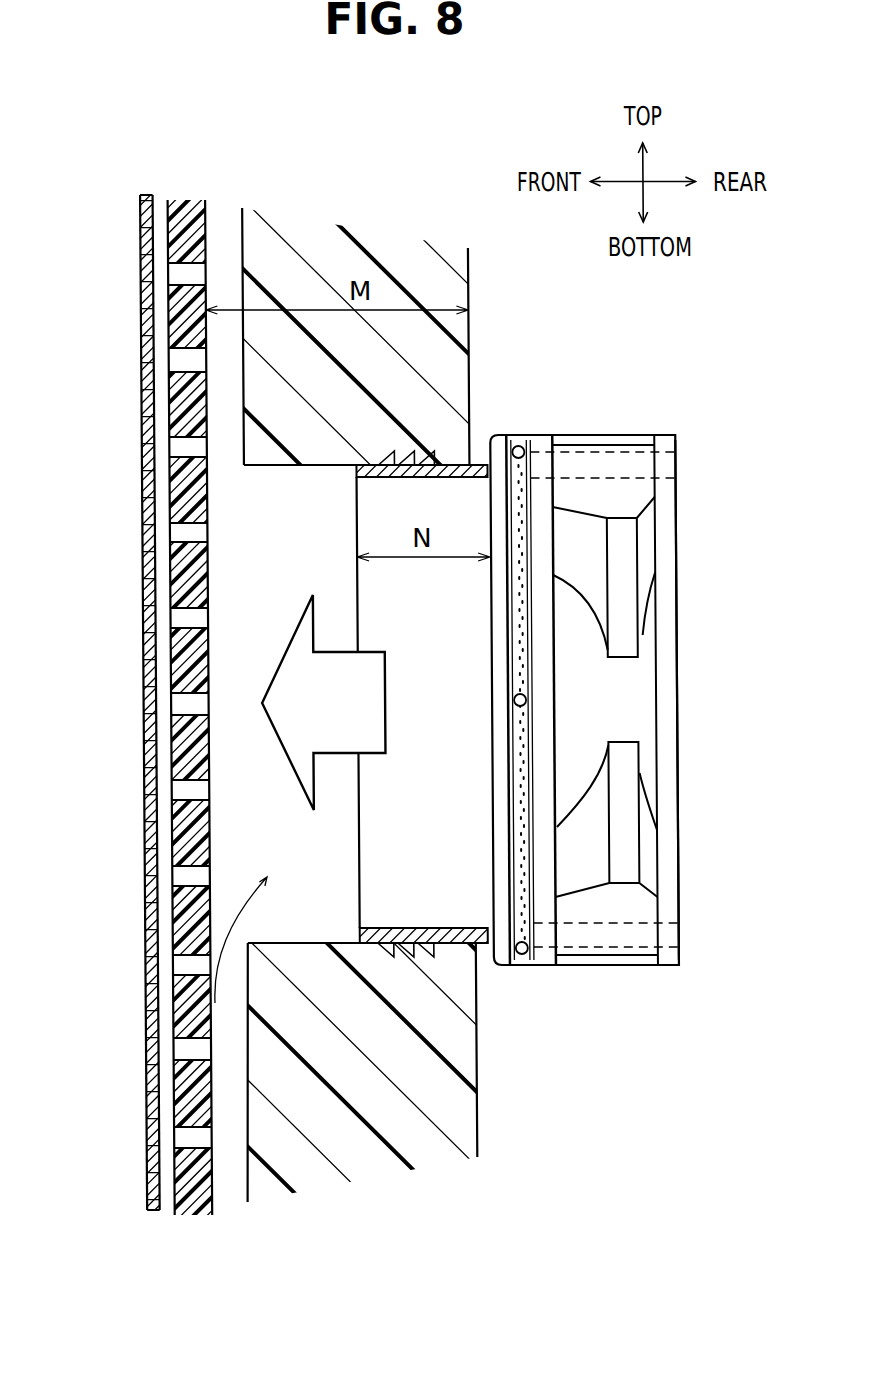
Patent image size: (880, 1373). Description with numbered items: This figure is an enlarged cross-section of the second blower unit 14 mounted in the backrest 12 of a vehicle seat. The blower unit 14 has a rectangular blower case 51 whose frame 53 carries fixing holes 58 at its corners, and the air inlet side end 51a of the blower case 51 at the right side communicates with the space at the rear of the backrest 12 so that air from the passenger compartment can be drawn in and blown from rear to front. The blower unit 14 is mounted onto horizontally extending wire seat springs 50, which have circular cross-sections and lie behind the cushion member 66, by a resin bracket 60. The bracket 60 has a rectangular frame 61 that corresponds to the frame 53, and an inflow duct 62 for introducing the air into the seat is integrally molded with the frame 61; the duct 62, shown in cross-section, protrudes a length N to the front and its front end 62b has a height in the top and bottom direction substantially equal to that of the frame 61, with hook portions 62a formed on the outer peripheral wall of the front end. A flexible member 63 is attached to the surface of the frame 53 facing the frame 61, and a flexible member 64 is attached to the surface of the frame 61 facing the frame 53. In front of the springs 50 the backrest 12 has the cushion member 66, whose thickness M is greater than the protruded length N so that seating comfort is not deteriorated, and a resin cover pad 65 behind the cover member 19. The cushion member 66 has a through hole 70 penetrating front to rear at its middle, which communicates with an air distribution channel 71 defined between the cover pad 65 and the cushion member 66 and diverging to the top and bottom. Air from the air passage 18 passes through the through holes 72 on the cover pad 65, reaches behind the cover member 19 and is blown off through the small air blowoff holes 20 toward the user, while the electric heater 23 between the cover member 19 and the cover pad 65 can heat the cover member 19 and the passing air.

The backrest 12 is at (126, 945).
The second blower unit 14 is at (583, 428).
The air passage 18 is at (178, 1022).
The cover member 19 is at (143, 477).
The air blowoff holes 20 is at (145, 537).
The electric heater 23 is at (162, 397).
The wire seat springs 50 is at (518, 445).
The blower case 51 is at (637, 435).
The frame 53 is at (612, 661).
The air inlet side end 51a is at (677, 787).
The fixing holes 58 is at (622, 478).
The bracket 60 is at (479, 950).
The frame 61 is at (498, 952).
The inflow duct 62 is at (464, 943).
The hook portions 62a is at (406, 943).
The front end 62b is at (326, 943).
The flexible member 63 is at (524, 543).
The flexible member 64 is at (511, 668).
The cover pad 65 is at (187, 232).
The cushion member 66 is at (416, 290).
The through hole 70 is at (312, 463).
The air distribution channel 71 is at (228, 398).
The through holes 72 is at (184, 873).